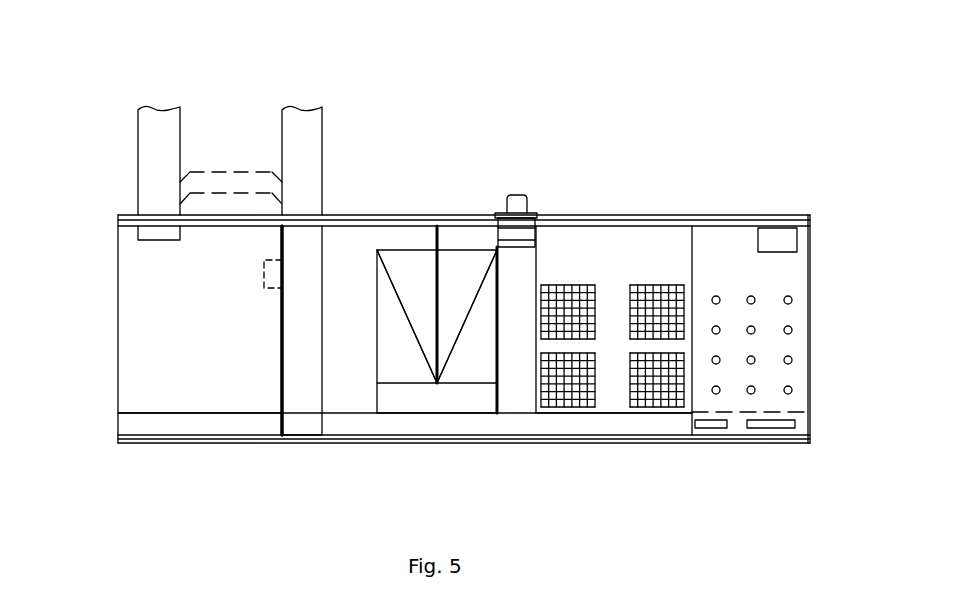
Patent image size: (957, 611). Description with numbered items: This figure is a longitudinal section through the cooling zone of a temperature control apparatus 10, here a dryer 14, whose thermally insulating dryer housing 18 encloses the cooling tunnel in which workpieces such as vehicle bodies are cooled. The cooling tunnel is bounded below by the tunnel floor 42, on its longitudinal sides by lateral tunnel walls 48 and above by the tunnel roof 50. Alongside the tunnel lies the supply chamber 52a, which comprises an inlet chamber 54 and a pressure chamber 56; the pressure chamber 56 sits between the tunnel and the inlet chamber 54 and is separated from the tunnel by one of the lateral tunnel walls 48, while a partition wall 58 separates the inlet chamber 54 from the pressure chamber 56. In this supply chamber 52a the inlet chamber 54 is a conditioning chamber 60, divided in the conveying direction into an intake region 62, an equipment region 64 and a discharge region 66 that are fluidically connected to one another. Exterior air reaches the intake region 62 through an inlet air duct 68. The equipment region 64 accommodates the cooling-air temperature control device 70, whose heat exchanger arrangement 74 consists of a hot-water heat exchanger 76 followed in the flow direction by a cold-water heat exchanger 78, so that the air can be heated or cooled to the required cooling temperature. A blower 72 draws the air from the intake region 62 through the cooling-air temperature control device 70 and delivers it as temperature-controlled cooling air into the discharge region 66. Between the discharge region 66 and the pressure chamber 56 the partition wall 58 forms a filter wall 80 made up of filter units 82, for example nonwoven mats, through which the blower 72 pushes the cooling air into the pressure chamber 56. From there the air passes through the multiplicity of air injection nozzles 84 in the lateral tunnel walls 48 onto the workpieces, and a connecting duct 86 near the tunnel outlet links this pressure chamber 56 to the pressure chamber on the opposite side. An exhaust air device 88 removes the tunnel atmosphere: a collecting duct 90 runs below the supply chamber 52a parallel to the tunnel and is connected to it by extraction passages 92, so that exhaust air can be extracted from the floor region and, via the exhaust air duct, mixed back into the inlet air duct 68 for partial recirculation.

The temperature control apparatus 10 is at (752, 103).
The dryer 14 is at (802, 203).
The dryer housing 18 is at (690, 212).
The tunnel floor 42 is at (141, 413).
The lateral tunnel wall 48 is at (778, 280).
The tunnel roof 50 is at (128, 224).
The supply chamber 52a is at (158, 285).
The inlet chamber 54 is at (175, 347).
The pressure chamber 56 is at (665, 258).
The partition wall 58 is at (605, 398).
The conditioning chamber 60 is at (207, 270).
The intake region 62 is at (245, 385).
The equipment region 64 is at (437, 420).
The discharge region 66 is at (678, 418).
The inlet air duct 68 is at (173, 135).
The cooling-air temperature control device 70 is at (437, 212).
The blower 72 is at (502, 213).
The heat exchanger arrangement 74 is at (423, 243).
The hot-water heat exchanger 76 is at (407, 263).
The cold-water heat exchanger 78 is at (460, 262).
The filter wall 80 is at (582, 257).
The filter unit 82 is at (590, 300).
The air injection nozzle 84 is at (716, 296).
The connecting duct 86 is at (780, 240).
The exhaust air device 88 is at (342, 153).
The collecting duct 90 is at (205, 418).
The extraction passage 92 is at (312, 137).